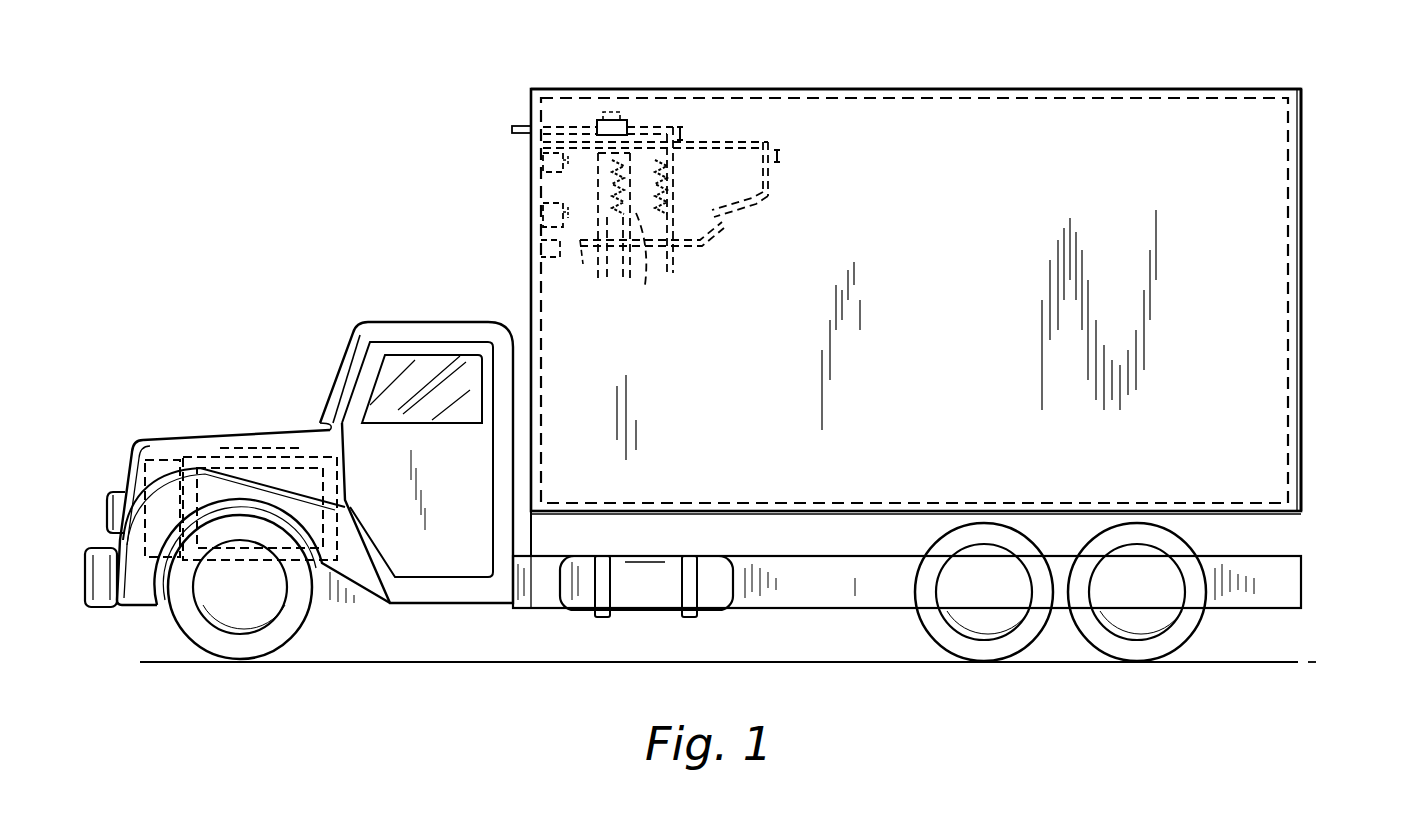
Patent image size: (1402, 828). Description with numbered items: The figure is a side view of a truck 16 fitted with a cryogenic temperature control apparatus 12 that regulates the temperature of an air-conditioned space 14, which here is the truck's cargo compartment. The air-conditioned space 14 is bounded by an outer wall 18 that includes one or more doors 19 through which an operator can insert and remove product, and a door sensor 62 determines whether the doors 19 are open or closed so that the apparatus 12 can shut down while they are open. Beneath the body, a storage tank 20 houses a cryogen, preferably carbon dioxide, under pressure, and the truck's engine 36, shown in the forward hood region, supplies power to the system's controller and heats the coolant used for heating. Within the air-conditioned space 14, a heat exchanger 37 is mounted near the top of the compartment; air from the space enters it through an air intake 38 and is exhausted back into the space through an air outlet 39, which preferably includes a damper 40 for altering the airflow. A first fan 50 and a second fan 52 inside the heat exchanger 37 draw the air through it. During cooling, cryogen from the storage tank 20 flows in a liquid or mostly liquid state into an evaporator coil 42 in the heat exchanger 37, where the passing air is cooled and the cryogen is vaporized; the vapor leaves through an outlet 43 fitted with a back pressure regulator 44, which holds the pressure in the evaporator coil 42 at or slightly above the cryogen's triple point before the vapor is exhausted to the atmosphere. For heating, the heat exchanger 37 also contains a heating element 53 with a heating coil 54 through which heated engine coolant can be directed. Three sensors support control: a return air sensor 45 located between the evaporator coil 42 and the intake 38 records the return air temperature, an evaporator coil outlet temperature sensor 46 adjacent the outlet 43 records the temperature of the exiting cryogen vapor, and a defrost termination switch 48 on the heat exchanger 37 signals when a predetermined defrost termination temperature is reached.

The cryogenic temperature control apparatus 12 is at (692, 50).
The air-conditioned space 14 is at (930, 354).
The truck 16 is at (428, 338).
The outer wall 18 is at (1098, 95).
The doors 19 is at (1299, 316).
The storage tank 20 is at (650, 585).
The engine 36 is at (276, 470).
The heat exchanger 37 is at (778, 173).
The air intake 38 is at (584, 264).
The air outlet 39 is at (758, 218).
The damper 40 is at (735, 208).
The evaporator coil 42 is at (676, 190).
The outlet 43 is at (555, 118).
The back pressure regulator 44 is at (632, 118).
The return air sensor 45 is at (540, 257).
The evaporator coil outlet temperature sensor 46 is at (688, 132).
The defrost termination switch 48 is at (784, 153).
The first fan 50 is at (540, 163).
The second fan 52 is at (540, 214).
The heating element 53 is at (640, 168).
The heating coil 54 is at (654, 263).
The door sensor 62 is at (1310, 100).